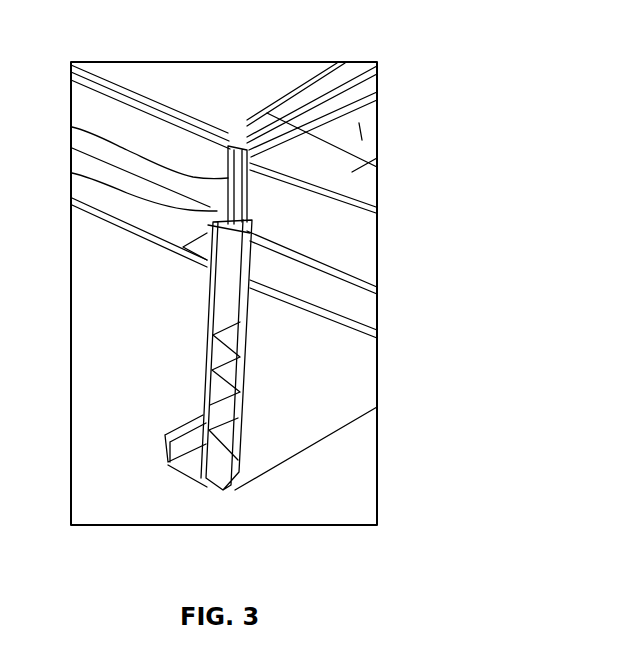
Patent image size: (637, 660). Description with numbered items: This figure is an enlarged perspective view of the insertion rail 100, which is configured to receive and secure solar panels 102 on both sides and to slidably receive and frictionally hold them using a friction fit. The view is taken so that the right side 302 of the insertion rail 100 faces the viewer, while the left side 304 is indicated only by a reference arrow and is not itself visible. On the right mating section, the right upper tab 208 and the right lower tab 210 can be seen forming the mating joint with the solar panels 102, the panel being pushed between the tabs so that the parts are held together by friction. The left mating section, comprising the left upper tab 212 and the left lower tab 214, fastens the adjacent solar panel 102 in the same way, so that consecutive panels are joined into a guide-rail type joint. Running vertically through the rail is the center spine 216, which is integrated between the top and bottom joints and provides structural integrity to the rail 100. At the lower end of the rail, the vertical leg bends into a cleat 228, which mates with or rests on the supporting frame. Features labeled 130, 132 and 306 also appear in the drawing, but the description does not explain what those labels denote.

The insertion rail 100 is at (175, 476).
The solar panel 102 is at (165, 88).
The connector 130 is at (287, 122).
The junction bracket 132 is at (185, 247).
The right upper tab 208 is at (368, 159).
The right lower tab 210 is at (377, 290).
The left upper tab 212 is at (240, 132).
The left lower tab 214 is at (72, 173).
The center spine 216 is at (72, 127).
The cleat 228 is at (200, 487).
The right side 302 is at (318, 392).
The left side 304 is at (191, 357).
The truss 306 is at (223, 313).